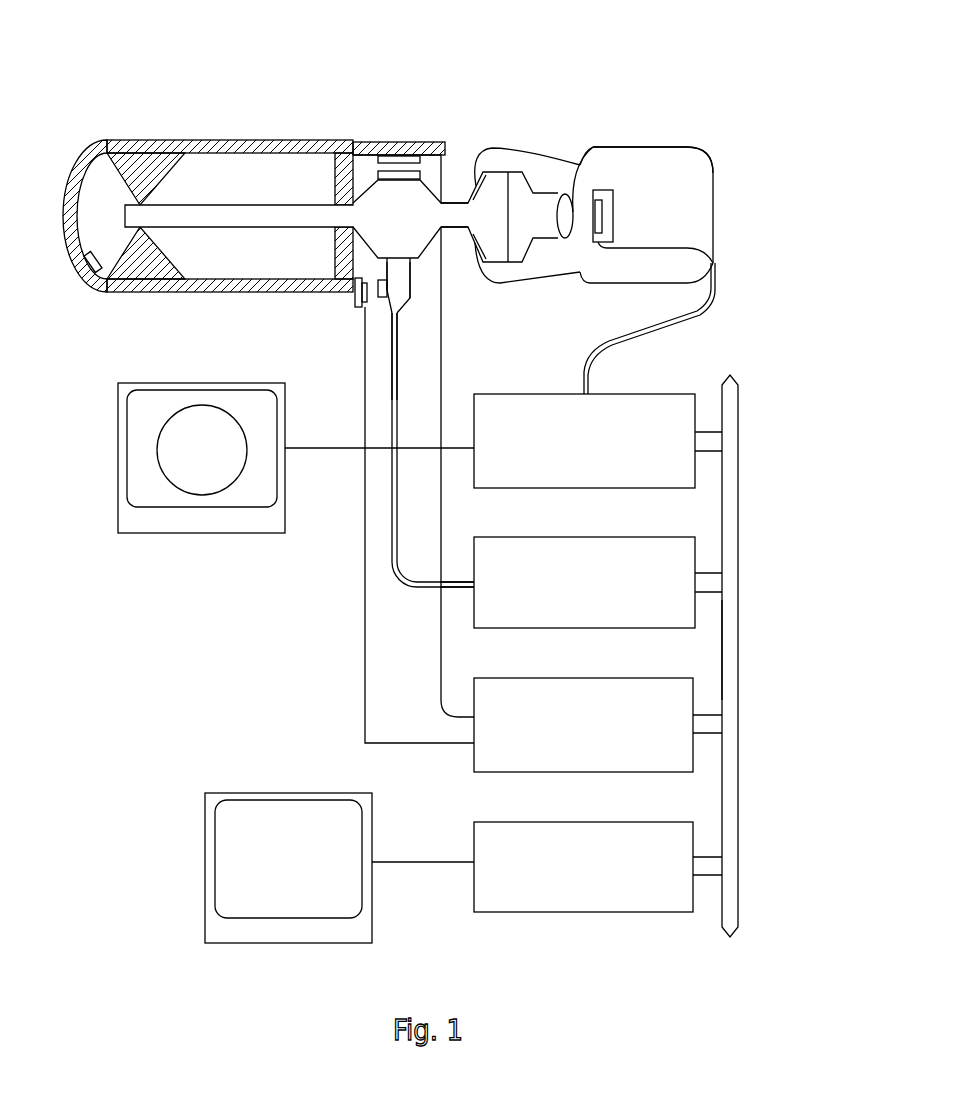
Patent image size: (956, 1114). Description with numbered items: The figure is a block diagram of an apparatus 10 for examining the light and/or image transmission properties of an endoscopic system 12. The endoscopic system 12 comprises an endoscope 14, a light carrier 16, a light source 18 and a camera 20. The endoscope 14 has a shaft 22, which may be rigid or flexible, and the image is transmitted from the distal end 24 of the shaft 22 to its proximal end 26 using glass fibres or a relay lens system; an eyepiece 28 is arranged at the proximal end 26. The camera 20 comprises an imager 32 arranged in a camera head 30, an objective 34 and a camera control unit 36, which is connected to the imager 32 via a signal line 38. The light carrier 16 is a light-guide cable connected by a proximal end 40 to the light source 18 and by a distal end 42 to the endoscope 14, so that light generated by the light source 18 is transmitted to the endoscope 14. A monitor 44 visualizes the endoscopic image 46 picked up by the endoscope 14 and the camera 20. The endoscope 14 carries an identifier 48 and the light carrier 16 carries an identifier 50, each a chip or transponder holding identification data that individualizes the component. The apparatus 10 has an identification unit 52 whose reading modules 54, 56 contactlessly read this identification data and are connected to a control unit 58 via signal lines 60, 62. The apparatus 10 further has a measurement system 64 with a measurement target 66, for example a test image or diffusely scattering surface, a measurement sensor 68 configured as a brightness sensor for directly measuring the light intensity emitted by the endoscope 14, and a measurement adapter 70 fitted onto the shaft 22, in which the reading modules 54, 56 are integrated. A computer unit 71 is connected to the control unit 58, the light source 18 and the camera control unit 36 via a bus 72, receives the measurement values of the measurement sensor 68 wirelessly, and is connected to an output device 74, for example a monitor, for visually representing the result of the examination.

The apparatus 10 is at (712, 120).
The endoscopic system 12 is at (466, 162).
The endoscope 14 is at (378, 212).
The light carrier 16 is at (390, 504).
The light source 18 is at (684, 557).
The camera 20 is at (718, 210).
The shaft 22 is at (243, 208).
The distal end 24 is at (143, 175).
The proximal end 26 is at (450, 222).
The eyepiece 28 is at (500, 188).
The camera head 30 is at (641, 158).
The imager 32 is at (607, 220).
The objective 34 is at (566, 212).
The camera control unit 36 is at (667, 407).
The signal line 38 is at (700, 307).
The proximal end 40 is at (458, 580).
The distal end 42 is at (408, 287).
The monitor 44 is at (155, 533).
The endoscopic image 46 is at (208, 407).
The identifier 48 is at (430, 143).
The identifier 50 is at (366, 312).
The identification unit 52 is at (404, 148).
The reading module 54 is at (393, 158).
The reading module 56 is at (357, 303).
The control unit 58 is at (673, 758).
The signal line 60 is at (362, 650).
The signal line 62 is at (439, 650).
The measurement system 64 is at (210, 128).
The measurement target 66 is at (85, 163).
The measurement sensor 68 is at (88, 270).
The measurement adapter 70 is at (165, 292).
The computer unit 71 is at (652, 902).
The bus 72 is at (730, 807).
The output device 74 is at (236, 930).